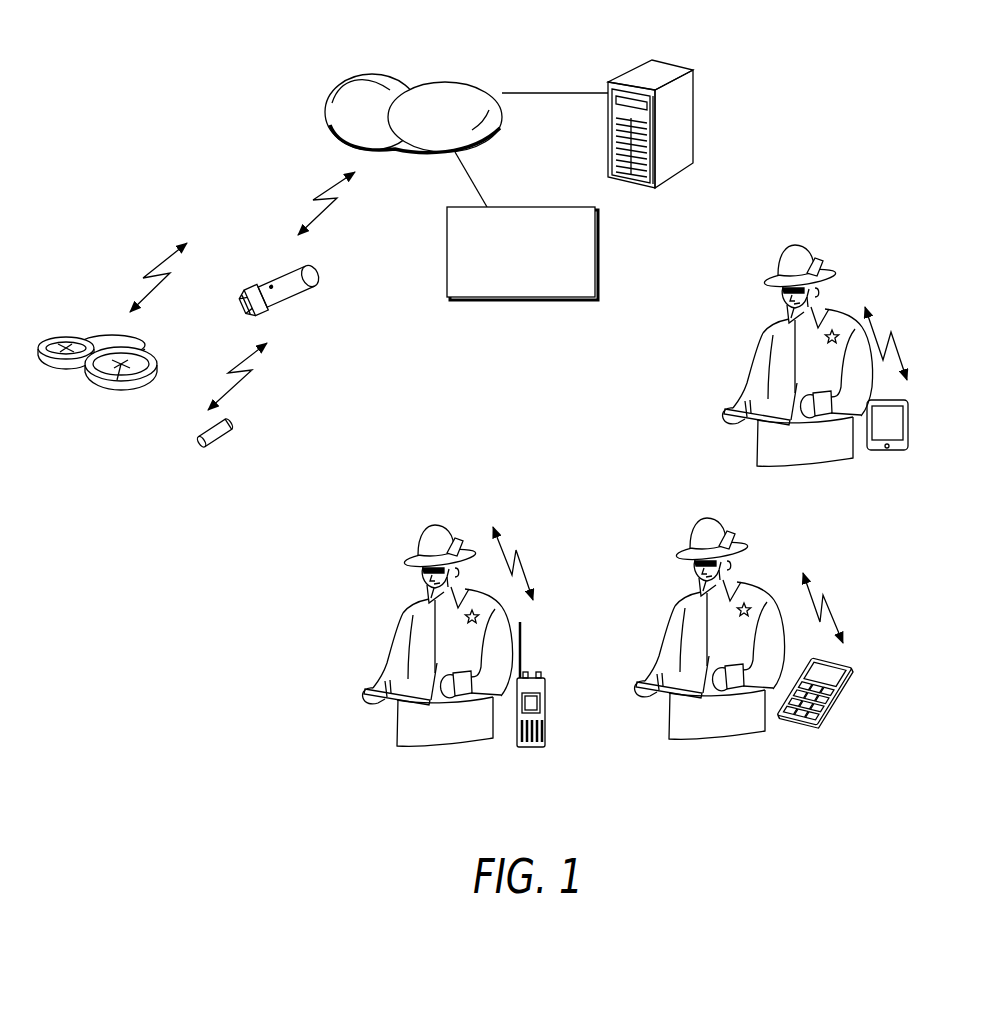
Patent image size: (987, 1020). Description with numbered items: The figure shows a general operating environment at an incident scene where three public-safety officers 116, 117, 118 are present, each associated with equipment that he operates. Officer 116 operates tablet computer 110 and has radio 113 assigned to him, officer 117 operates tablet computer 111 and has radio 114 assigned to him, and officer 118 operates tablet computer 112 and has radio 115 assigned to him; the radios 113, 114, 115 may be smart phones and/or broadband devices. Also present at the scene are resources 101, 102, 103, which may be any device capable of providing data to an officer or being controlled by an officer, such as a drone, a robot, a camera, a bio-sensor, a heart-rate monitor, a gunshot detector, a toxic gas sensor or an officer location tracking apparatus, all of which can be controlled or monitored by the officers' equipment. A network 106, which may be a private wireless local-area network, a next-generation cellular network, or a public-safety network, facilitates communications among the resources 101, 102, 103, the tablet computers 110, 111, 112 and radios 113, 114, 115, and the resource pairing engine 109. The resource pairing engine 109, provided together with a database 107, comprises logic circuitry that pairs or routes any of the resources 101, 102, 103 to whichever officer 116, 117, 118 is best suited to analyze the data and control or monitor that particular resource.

The resource 101 is at (135, 340).
The resource 102 is at (225, 422).
The resource 103 is at (315, 280).
The network 106 is at (462, 80).
The database 107 is at (672, 63).
The resource pairing engine 109 is at (520, 206).
The tablet computer 110 is at (398, 706).
The tablet computer 111 is at (668, 699).
The tablet computer 112 is at (755, 420).
The radio 113 is at (553, 704).
The radio 114 is at (848, 700).
The radio 115 is at (920, 424).
The officer 116 is at (383, 580).
The officer 117 is at (668, 548).
The officer 118 is at (750, 330).